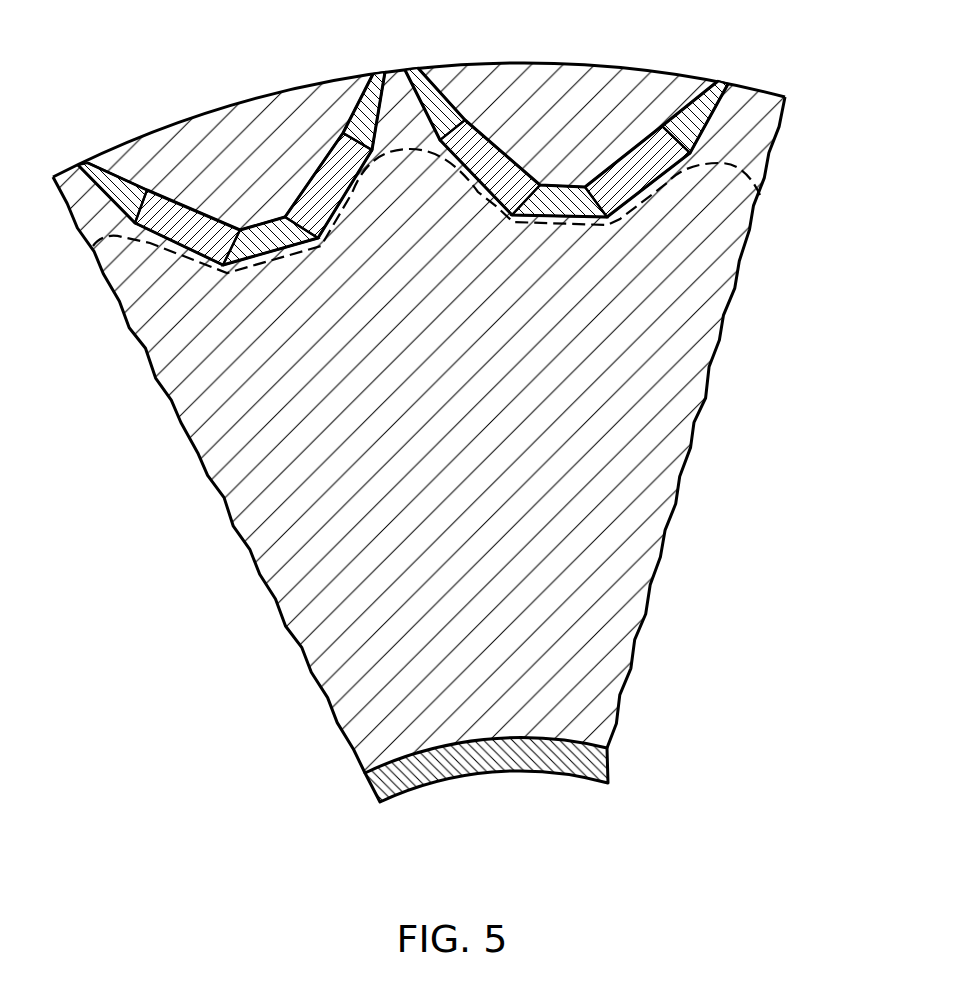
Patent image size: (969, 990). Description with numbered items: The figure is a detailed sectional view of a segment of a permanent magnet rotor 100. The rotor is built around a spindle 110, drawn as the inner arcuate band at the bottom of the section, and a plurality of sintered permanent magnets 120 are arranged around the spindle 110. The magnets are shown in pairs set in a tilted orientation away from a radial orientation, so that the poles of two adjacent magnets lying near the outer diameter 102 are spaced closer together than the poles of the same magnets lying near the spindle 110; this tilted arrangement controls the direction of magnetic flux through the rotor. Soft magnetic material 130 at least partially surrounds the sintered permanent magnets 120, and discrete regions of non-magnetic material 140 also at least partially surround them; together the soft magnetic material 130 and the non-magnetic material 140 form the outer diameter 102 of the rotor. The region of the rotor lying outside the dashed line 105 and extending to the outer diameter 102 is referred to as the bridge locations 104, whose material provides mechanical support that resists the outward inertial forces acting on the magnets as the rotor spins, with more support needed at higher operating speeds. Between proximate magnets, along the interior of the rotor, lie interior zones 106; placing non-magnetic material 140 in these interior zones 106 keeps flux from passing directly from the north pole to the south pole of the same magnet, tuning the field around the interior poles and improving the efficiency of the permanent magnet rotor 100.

The permanent magnet rotor 100 is at (472, 421).
The outer diameter 102 is at (228, 104).
The bridge locations 104 is at (748, 117).
The dashed line 105 is at (426, 211).
The interior zones 106 is at (403, 186).
The spindle 110 is at (483, 765).
The sintered permanent magnets 120 is at (653, 148).
The soft magnetic material 130 is at (670, 447).
The non-magnetic material 140 is at (430, 86).